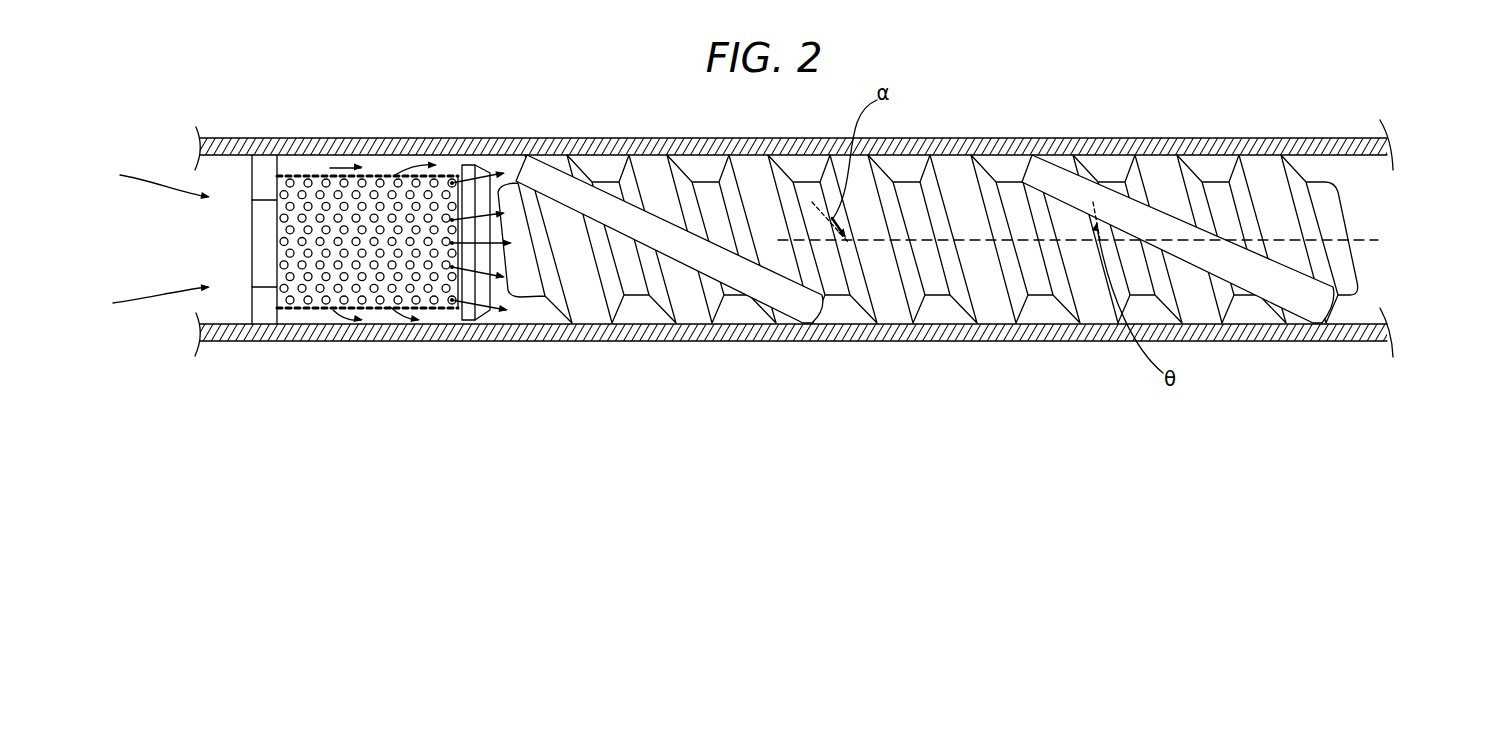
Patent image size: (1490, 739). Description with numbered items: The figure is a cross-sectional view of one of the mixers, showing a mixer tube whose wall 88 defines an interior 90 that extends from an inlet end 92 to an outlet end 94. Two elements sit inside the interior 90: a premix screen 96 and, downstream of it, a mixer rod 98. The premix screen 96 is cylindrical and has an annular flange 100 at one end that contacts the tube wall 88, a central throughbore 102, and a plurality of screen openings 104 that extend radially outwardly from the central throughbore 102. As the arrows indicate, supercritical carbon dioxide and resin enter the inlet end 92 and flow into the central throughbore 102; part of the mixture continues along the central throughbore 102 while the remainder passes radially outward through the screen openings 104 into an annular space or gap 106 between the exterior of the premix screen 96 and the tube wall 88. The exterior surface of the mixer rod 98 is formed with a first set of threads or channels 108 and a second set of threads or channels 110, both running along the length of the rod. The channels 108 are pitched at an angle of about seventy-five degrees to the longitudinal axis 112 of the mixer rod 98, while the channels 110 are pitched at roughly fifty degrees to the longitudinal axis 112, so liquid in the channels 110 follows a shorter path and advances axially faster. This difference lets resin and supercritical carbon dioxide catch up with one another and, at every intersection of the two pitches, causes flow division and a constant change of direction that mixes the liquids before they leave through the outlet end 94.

The wall 88 is at (587, 147).
The interior 90 is at (1007, 165).
The inlet end 92 is at (198, 178).
The outlet end 94 is at (1407, 263).
The premix screen 96 is at (367, 293).
The mixer rod 98 is at (928, 243).
The annular flange 100 is at (260, 327).
The central throughbore 102 is at (252, 240).
The screen openings 104 is at (433, 283).
The annular space or gap 106 is at (307, 165).
The first set of threads or channels 108 is at (720, 327).
The second set of threads or channels 110 is at (810, 305).
The longitudinal axis 112 is at (1367, 236).